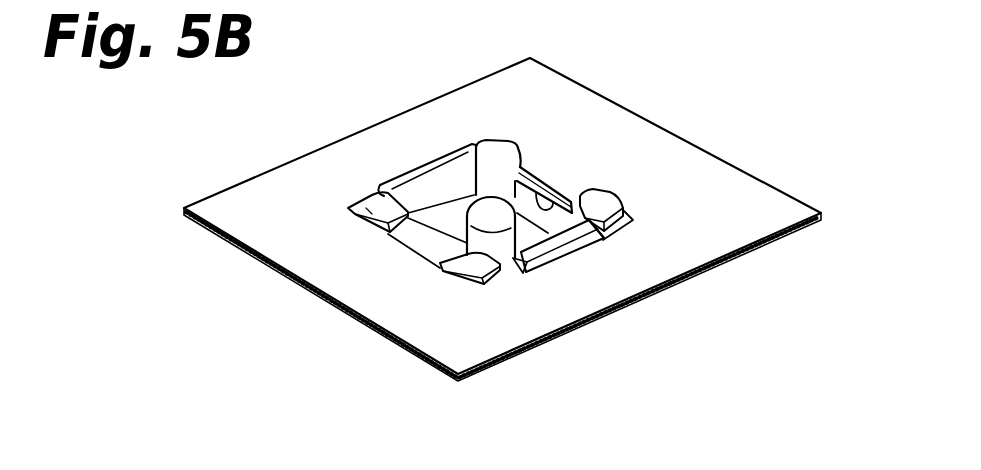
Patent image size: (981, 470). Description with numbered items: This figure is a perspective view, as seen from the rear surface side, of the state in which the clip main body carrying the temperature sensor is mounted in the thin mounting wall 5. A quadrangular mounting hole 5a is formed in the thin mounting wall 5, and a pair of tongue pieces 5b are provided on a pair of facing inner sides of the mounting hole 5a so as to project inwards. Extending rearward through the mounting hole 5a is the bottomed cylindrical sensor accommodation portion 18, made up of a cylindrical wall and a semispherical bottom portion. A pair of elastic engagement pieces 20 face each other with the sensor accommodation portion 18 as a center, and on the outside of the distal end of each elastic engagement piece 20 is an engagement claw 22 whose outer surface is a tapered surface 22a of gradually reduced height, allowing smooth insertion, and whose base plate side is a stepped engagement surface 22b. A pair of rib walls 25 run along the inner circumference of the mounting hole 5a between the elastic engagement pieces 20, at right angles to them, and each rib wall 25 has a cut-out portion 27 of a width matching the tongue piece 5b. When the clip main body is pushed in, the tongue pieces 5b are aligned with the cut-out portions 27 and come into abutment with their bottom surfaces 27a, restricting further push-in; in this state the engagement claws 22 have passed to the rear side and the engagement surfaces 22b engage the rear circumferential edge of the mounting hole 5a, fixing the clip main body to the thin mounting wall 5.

The thin mounting wall 5 is at (748, 190).
The mounting hole 5a is at (500, 283).
The tongue piece 5b is at (568, 210).
The sensor accommodation portion 18 is at (467, 242).
The elastic engagement piece 20 is at (427, 180).
The engagement claw 22 is at (548, 265).
The tapered surface 22a is at (597, 240).
The engagement surface 22b is at (517, 263).
The rib wall 25 is at (372, 213).
The cut-out portion 27 is at (532, 162).
The bottom surface 27a is at (554, 188).